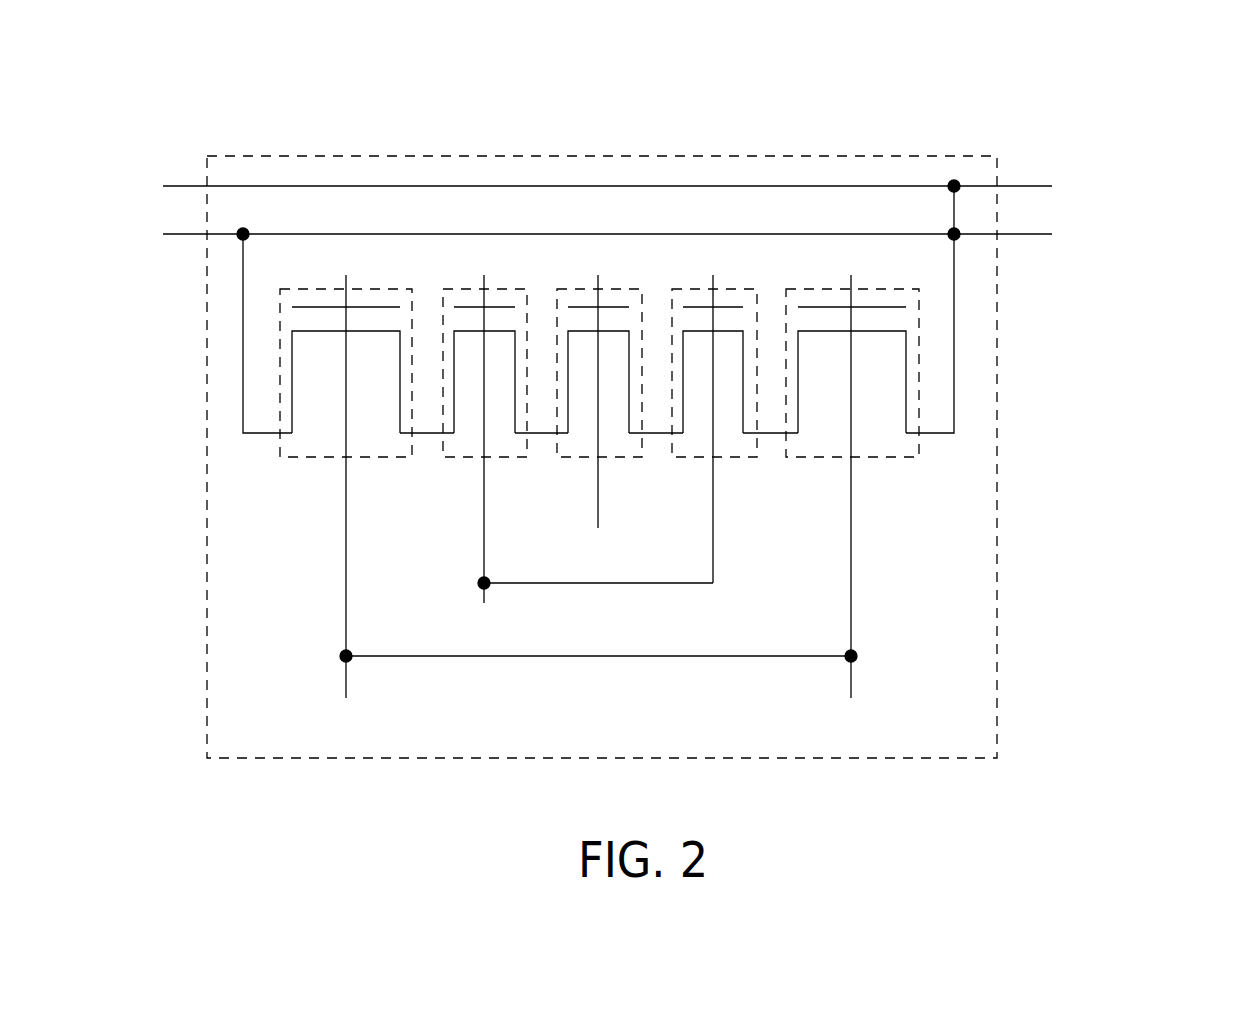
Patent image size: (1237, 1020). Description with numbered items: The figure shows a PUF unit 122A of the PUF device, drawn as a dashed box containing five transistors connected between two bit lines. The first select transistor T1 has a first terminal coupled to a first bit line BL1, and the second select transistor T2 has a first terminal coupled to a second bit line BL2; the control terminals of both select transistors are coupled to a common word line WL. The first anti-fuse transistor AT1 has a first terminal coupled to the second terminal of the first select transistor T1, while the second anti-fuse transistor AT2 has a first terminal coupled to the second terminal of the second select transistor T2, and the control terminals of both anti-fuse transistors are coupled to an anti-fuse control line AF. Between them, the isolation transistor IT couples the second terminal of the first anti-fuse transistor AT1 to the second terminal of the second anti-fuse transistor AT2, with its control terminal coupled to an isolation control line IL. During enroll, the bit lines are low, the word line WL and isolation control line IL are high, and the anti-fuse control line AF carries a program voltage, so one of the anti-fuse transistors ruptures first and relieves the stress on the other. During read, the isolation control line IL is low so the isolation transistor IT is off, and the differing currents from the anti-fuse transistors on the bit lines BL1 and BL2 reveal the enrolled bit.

The PUF unit 122A is at (1104, 116).
The first bit line BL1 is at (581, 235).
The second bit line BL2 is at (635, 186).
The first select transistor T1 is at (300, 460).
The first anti-fuse transistor AT1 is at (467, 460).
The isolation transistor IT is at (582, 460).
The second anti-fuse transistor AT2 is at (695, 460).
The second select transistor T2 is at (807, 460).
The isolation control line IL is at (596, 513).
The anti-fuse control line AF is at (589, 607).
The word line WL is at (587, 692).